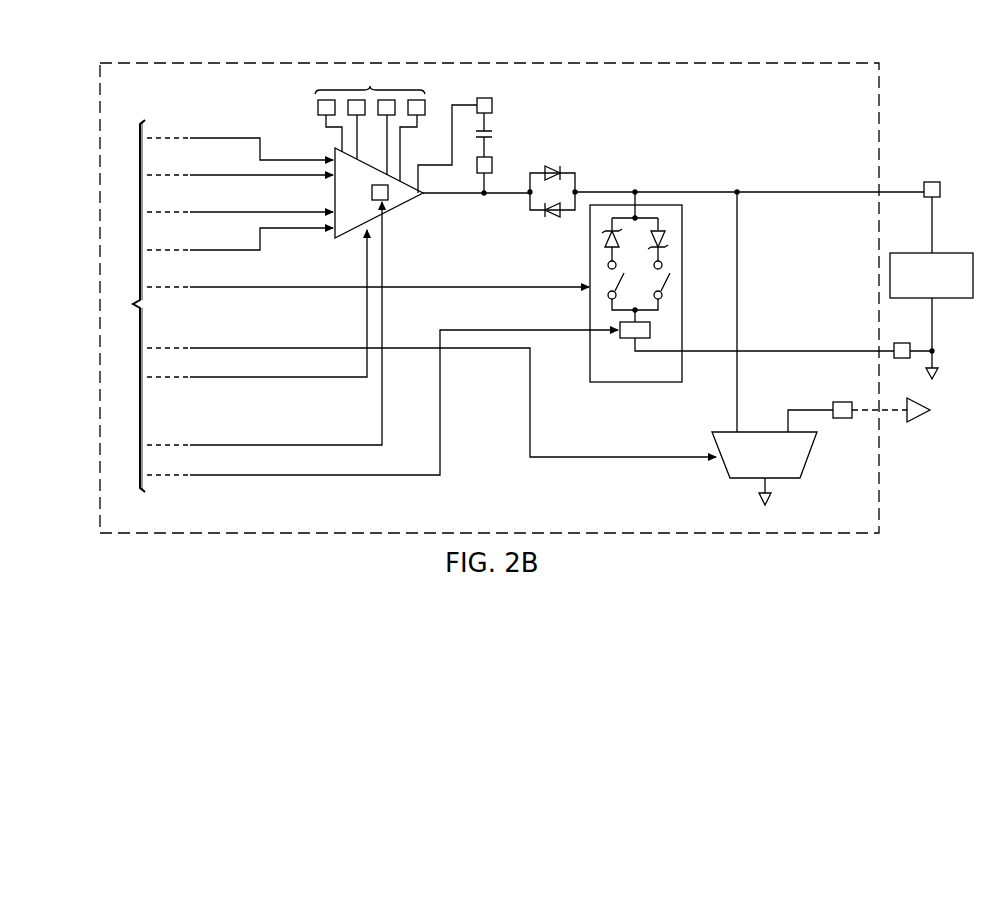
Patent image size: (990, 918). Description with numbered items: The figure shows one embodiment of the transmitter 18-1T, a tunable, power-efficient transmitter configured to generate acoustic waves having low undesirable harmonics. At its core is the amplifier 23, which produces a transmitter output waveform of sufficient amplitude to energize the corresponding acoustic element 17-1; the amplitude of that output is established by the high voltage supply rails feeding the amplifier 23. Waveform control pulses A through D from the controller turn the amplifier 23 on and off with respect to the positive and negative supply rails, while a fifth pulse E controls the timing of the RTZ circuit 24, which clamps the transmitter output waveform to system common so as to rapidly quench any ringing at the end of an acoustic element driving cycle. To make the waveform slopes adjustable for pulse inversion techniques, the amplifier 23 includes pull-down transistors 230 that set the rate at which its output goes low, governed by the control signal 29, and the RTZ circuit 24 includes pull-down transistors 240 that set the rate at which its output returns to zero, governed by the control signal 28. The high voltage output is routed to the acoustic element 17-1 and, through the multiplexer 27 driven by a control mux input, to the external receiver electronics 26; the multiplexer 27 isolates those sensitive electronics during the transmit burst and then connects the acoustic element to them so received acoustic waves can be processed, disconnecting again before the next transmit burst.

The transmitter 18-1T is at (883, 114).
The amplifier 23 is at (333, 196).
The pull-down transistors 230 is at (396, 201).
The RTZ circuit 24 is at (619, 309).
The pull-down transistors 240 is at (630, 340).
The external receiver electronics 26 is at (916, 420).
The multiplexer 27 is at (809, 458).
The control signal 28 is at (442, 394).
The control signal 29 is at (384, 374).
The acoustic element 17-1 is at (948, 252).